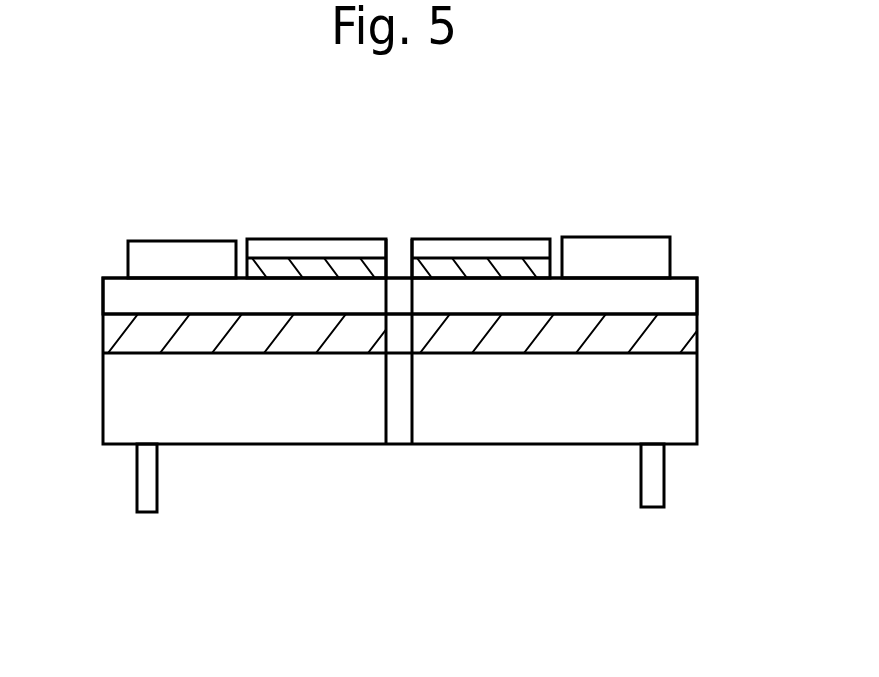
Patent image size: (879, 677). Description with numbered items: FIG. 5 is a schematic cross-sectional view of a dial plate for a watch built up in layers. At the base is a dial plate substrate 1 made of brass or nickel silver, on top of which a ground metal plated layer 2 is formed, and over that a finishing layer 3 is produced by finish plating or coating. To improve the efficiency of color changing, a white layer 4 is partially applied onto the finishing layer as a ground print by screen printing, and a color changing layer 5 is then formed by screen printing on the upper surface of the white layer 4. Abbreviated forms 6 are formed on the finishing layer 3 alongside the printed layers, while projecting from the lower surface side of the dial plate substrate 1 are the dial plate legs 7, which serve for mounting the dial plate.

The dial plate substrate 1 is at (463, 425).
The ground metal plated layer 2 is at (670, 337).
The finishing layer 3 is at (670, 292).
The white layer 4 is at (511, 263).
The color changing layer 5 is at (318, 245).
The abbreviated forms 6 is at (188, 262).
The dial plate legs 7 is at (143, 487).